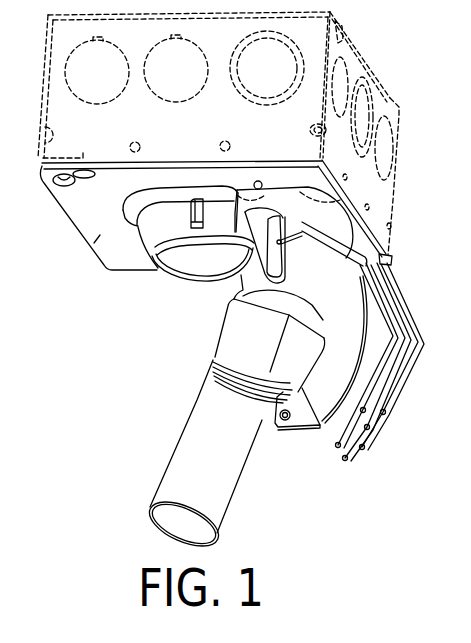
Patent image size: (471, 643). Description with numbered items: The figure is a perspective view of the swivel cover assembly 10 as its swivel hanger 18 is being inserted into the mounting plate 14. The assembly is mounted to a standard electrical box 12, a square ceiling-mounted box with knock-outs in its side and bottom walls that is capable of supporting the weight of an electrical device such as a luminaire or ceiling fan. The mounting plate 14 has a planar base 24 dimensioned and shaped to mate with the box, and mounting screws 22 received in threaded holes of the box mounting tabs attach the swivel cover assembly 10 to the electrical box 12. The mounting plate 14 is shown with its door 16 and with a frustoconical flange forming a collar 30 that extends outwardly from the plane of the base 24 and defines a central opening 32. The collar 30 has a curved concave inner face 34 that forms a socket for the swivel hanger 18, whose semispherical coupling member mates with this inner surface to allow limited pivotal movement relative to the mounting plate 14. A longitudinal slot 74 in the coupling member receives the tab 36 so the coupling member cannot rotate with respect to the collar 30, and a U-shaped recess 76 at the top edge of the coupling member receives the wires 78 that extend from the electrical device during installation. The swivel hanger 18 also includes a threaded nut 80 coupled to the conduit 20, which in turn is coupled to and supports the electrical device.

The swivel cover assembly 10 is at (246, 384).
The electrical box 12 is at (380, 89).
The mounting plate 14 is at (107, 271).
The door 16 is at (295, 430).
The swivel hanger 18 is at (300, 386).
The conduit 20 is at (155, 486).
The mounting screws 22 is at (57, 185).
The planar base 24 is at (100, 235).
The collar 30 is at (155, 268).
The central opening 32 is at (193, 258).
The curved concave inner face 34 is at (216, 268).
The tab 36 is at (194, 199).
The longitudinal slot 74 is at (285, 268).
The U-shaped recess 76 is at (310, 318).
The wires 78 is at (424, 362).
The threaded nut 80 is at (200, 358).